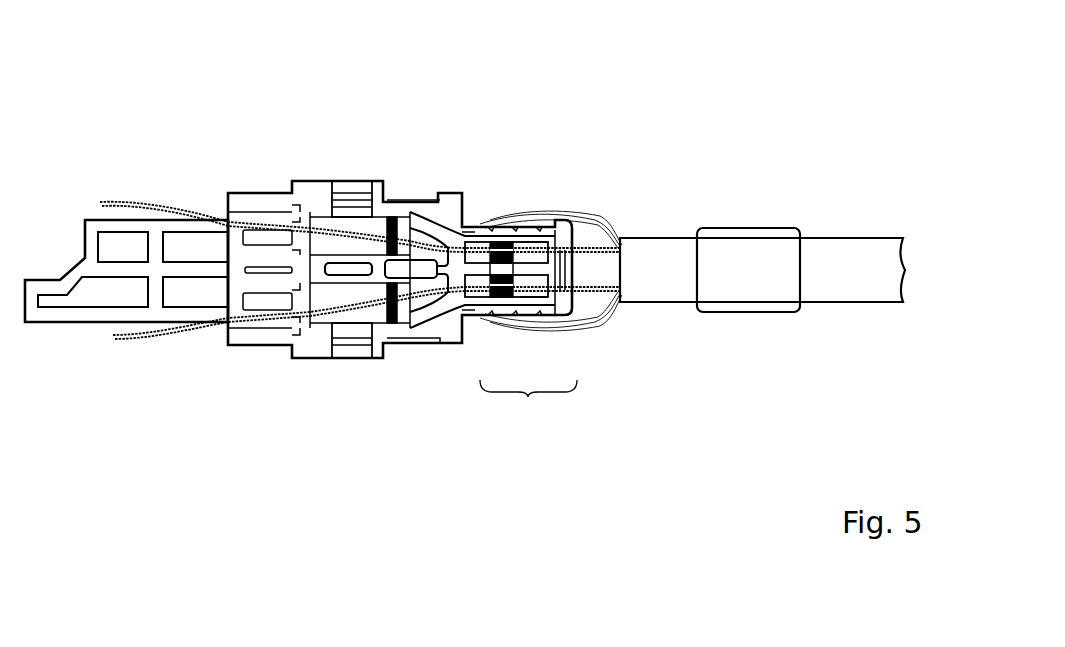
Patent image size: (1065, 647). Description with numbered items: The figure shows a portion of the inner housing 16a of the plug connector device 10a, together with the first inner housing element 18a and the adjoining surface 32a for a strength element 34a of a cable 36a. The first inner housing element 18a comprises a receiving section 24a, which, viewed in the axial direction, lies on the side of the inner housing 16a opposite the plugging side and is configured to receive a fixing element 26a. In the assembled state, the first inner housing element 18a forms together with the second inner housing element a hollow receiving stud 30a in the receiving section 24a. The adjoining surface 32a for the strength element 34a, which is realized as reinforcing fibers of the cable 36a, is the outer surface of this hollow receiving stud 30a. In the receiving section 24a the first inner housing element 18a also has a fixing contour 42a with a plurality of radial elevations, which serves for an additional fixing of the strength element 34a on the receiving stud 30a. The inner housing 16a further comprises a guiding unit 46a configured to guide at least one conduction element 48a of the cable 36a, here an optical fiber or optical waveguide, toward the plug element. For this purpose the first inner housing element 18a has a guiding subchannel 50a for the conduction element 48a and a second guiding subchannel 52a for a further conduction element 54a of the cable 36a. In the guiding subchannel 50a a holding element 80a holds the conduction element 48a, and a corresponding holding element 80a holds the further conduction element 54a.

The plug connector device 10a is at (452, 143).
The inner housing 16a is at (263, 357).
The first inner housing element 18a is at (318, 195).
The receiving section 24a is at (528, 397).
The fixing element 26a is at (753, 265).
The hollow receiving stud 30a is at (578, 210).
The adjoining surface 32a is at (480, 228).
The strength element 34a is at (538, 315).
The cable 36a is at (857, 272).
The fixing contour 42a is at (503, 315).
The guiding unit 46a is at (378, 318).
The conduction element 48a is at (130, 202).
The guiding subchannel 50a is at (262, 217).
The second guiding subchannel 52a is at (328, 302).
The further conduction element 54a is at (132, 342).
The holding element 80a is at (430, 285).